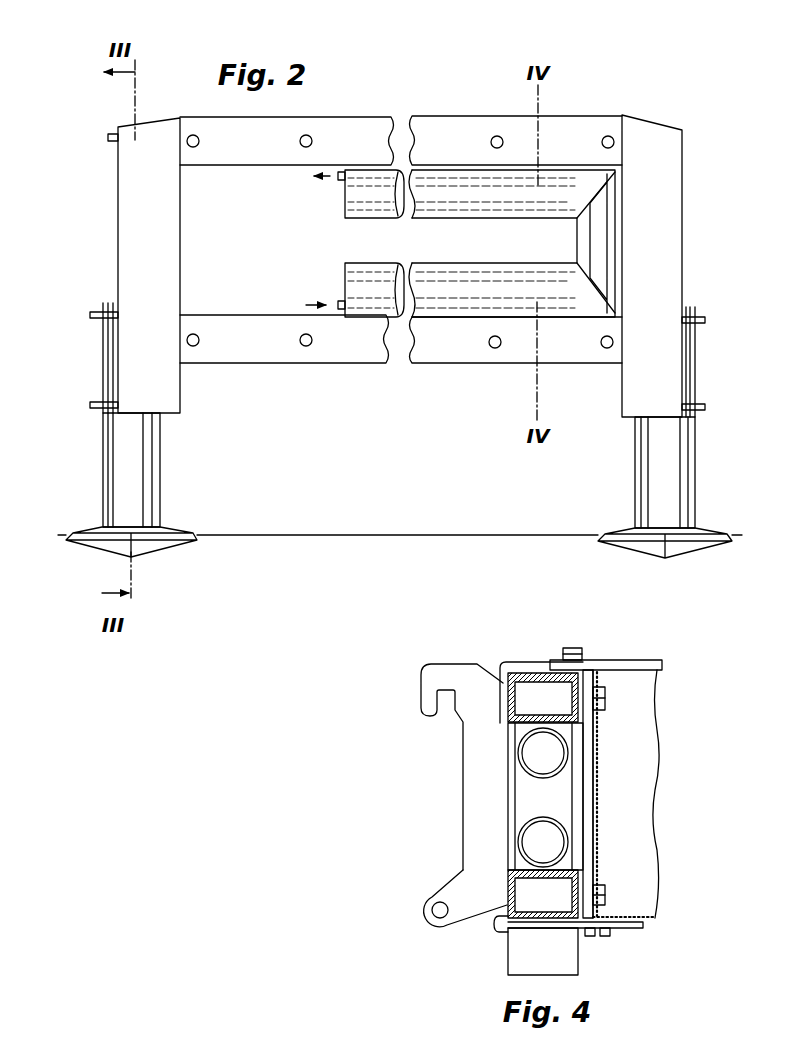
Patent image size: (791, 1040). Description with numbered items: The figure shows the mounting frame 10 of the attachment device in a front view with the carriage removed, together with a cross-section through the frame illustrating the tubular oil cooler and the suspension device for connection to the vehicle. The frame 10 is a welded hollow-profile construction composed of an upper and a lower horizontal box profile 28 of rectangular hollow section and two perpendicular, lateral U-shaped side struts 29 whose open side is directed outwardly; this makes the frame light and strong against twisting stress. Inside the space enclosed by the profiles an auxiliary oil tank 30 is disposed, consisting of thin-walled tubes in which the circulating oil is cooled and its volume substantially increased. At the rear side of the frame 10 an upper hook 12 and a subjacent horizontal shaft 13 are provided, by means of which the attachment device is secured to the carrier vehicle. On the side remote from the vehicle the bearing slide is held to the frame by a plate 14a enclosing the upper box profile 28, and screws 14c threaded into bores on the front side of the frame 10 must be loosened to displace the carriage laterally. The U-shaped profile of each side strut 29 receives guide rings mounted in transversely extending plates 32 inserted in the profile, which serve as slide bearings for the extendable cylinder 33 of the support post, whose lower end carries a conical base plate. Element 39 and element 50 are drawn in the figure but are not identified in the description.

In FIG. 2, the mounting frame 10 is at (359, 106).
In FIG. 4, the mounting frame 10 is at (554, 641).
In FIG. 4, the upper hook 12 is at (442, 668).
In FIG. 4, the horizontal shaft 13 is at (440, 913).
In FIG. 4, the plate 14a is at (572, 648).
In FIG. 4, the screw 14c is at (600, 711).
In FIG. 2, the horizontal box profile 28 is at (455, 131).
In FIG. 4, the horizontal box profile 28 is at (523, 673).
In FIG. 2, the U-shaped side strut 29 is at (162, 237).
In FIG. 4, the U-shaped side strut 29 is at (512, 736).
In FIG. 2, the auxiliary oil tank 30 is at (507, 273).
In FIG. 4, the auxiliary oil tank 30 is at (527, 803).
In FIG. 2, the transversely extending plate 32 is at (103, 397).
In FIG. 2, the extendable cylinder 33 is at (153, 496).
In FIG. 2, the stop 39 is at (110, 141).
In FIG. 4, the channel member 50 is at (633, 662).